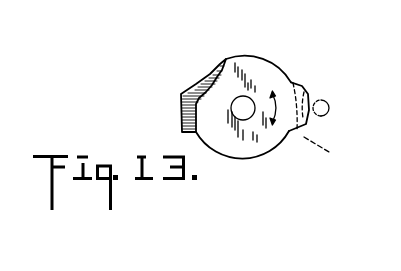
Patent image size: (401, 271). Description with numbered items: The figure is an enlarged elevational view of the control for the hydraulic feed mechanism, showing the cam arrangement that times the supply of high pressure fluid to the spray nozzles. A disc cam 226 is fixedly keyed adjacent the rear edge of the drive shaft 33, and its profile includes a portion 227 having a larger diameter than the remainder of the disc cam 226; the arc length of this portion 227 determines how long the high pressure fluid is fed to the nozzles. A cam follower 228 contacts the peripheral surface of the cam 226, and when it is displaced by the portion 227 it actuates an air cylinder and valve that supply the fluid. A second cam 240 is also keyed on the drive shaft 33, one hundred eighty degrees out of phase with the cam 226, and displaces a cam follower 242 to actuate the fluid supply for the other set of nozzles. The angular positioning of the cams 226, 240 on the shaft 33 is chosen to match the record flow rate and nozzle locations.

The disc cam 226 is at (258, 73).
The cam 240 is at (203, 78).
The portion 227 is at (307, 90).
The cam follower 228 is at (329, 105).
The cam follower 242 is at (333, 150).
The drive shaft 33 is at (245, 110).